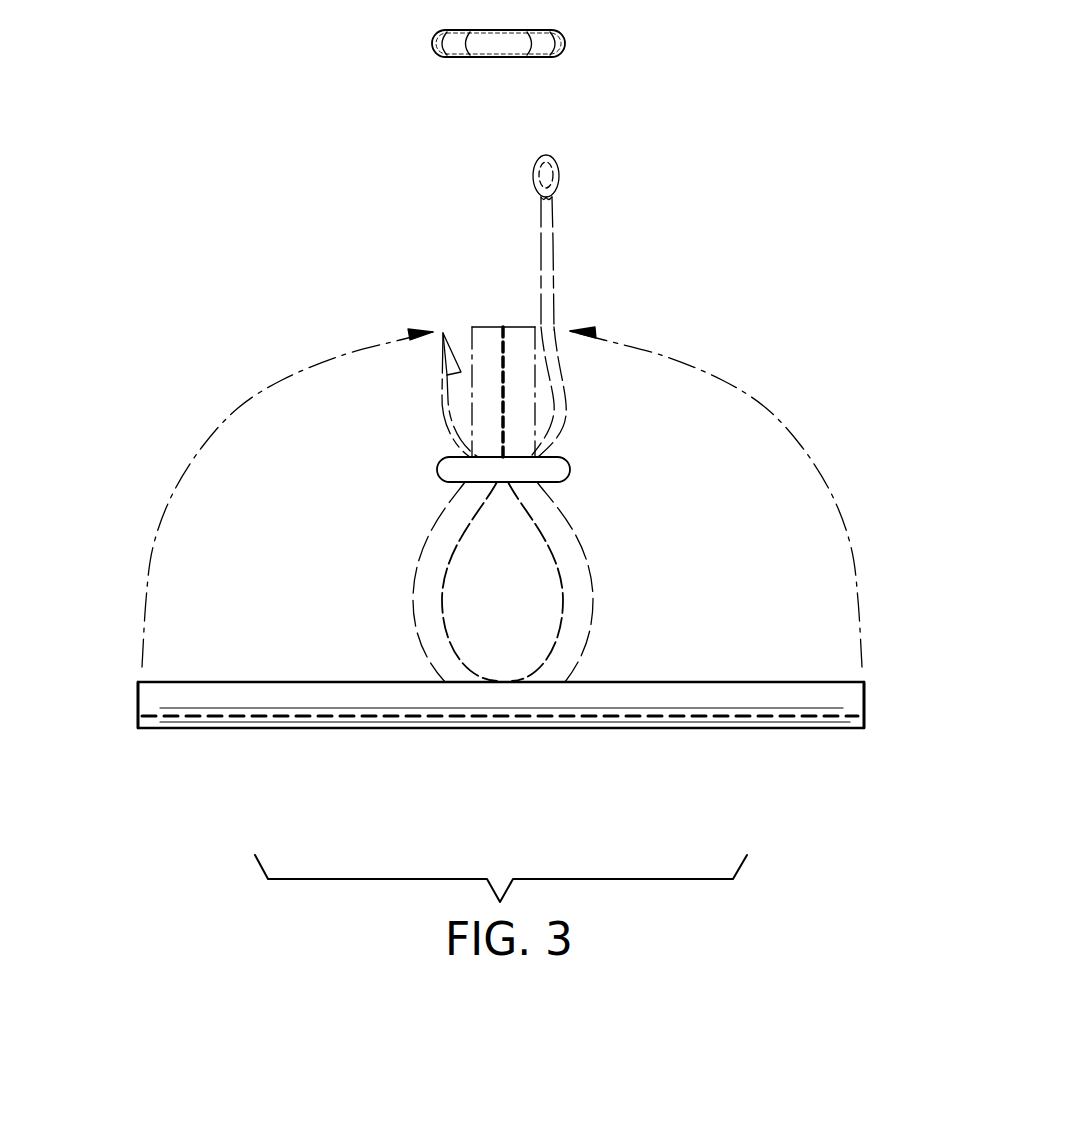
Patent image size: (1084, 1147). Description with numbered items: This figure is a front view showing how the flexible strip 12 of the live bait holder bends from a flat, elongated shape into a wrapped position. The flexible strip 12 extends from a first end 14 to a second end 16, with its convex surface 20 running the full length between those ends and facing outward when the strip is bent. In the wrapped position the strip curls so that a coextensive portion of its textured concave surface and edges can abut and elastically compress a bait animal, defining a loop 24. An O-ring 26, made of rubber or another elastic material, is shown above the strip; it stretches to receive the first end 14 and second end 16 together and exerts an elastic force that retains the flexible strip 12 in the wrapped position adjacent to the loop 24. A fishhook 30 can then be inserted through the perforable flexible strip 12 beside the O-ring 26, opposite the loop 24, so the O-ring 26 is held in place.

The flexible strip 12 is at (480, 748).
The first end 14 is at (138, 697).
The second end 16 is at (864, 697).
The convex surface 20 is at (712, 700).
The loop 24 is at (545, 653).
The O-ring 26 is at (592, 35).
The fishhook 30 is at (580, 251).